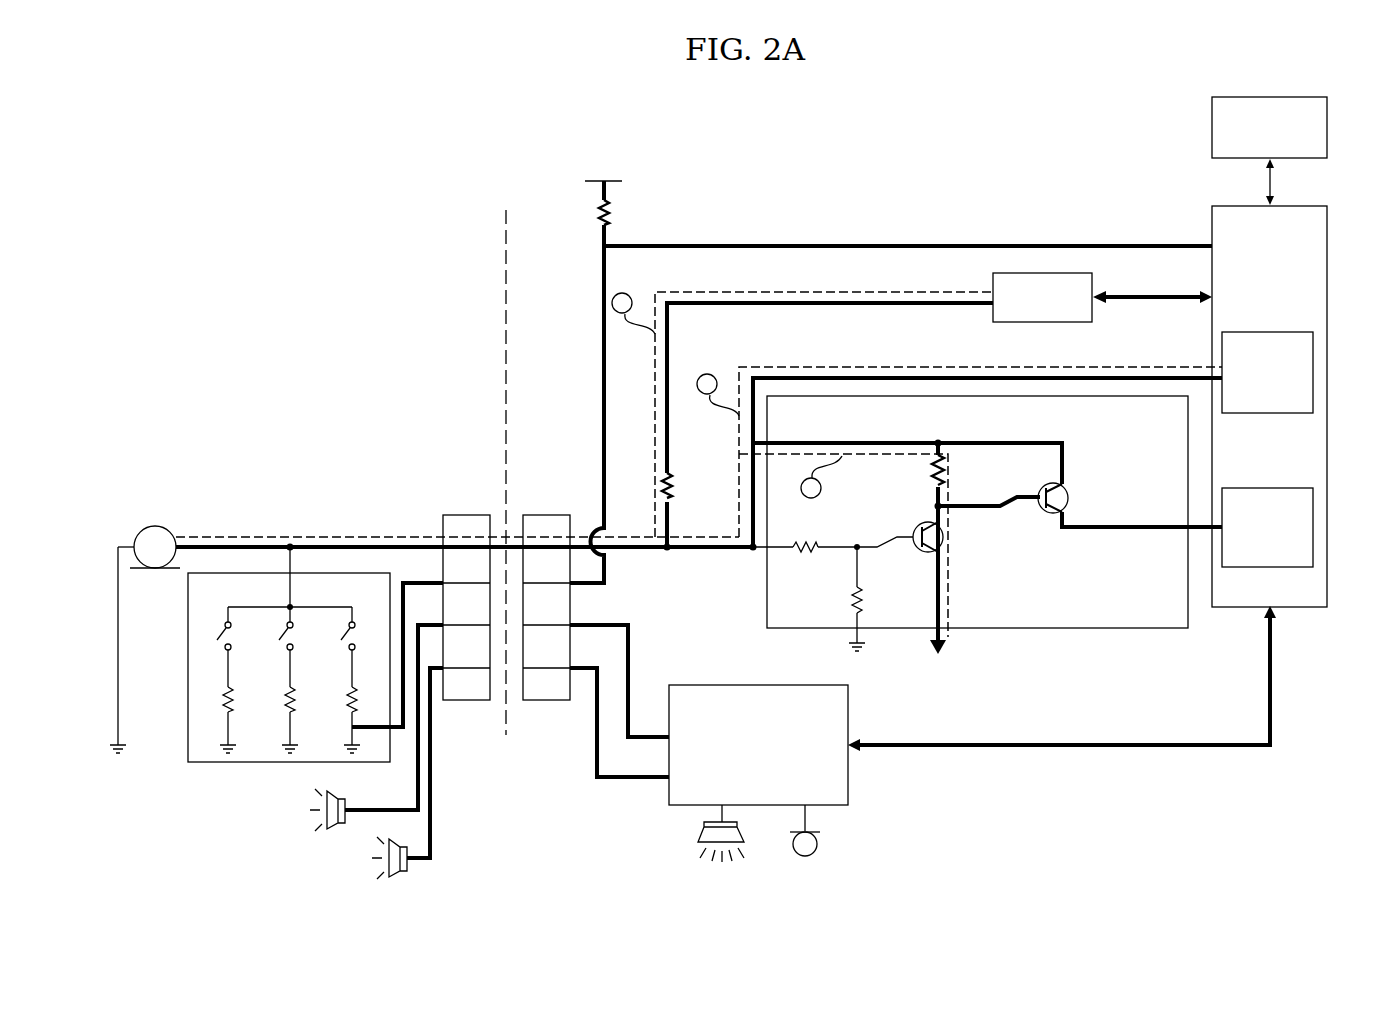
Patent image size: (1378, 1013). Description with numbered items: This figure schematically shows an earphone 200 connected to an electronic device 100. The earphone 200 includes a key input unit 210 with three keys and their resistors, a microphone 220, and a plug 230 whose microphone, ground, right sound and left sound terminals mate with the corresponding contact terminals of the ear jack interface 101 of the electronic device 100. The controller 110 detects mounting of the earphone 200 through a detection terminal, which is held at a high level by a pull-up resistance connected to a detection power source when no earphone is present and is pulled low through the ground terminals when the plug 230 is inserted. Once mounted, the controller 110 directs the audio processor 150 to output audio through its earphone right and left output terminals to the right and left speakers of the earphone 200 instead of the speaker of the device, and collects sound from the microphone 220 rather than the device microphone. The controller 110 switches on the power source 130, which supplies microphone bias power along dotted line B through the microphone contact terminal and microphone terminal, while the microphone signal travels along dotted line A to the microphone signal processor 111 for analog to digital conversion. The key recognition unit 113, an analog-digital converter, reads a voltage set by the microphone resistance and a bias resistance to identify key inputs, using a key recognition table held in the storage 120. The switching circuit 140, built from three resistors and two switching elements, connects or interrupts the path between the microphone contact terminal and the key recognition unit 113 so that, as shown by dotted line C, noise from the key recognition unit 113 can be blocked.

The electronic device 100 is at (1025, 147).
The ear jack interface 101 is at (541, 515).
The controller 110 is at (1328, 230).
The microphone signal processor 111 is at (1313, 375).
The key recognition unit 113 is at (1313, 529).
The storage 120 is at (1328, 122).
The power source 130 is at (1040, 272).
The switching circuit 140 is at (1022, 628).
The audio processor 150 is at (848, 732).
The earphone 200 is at (342, 186).
The key input unit 210 is at (208, 763).
The microphone 220 is at (133, 541).
The plug 230 is at (463, 515).